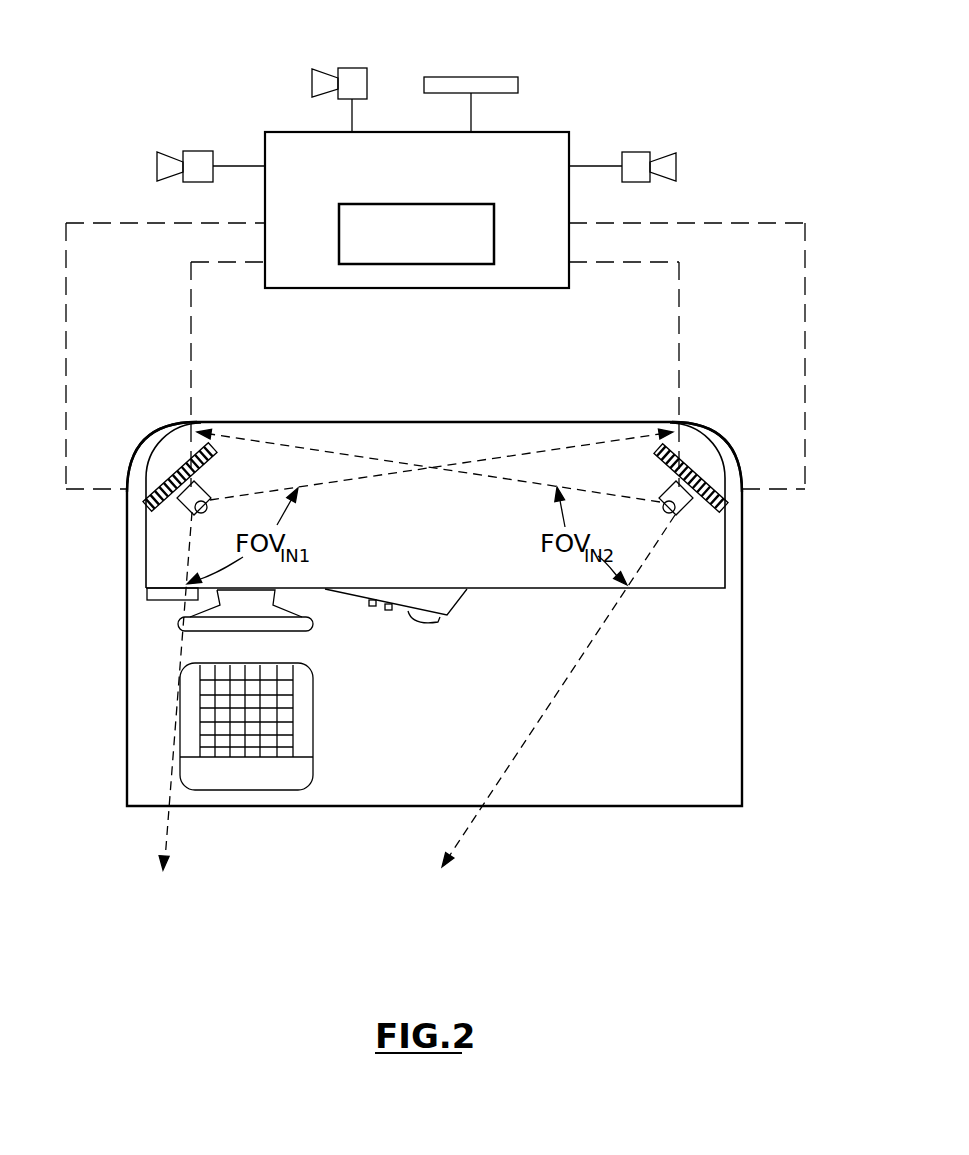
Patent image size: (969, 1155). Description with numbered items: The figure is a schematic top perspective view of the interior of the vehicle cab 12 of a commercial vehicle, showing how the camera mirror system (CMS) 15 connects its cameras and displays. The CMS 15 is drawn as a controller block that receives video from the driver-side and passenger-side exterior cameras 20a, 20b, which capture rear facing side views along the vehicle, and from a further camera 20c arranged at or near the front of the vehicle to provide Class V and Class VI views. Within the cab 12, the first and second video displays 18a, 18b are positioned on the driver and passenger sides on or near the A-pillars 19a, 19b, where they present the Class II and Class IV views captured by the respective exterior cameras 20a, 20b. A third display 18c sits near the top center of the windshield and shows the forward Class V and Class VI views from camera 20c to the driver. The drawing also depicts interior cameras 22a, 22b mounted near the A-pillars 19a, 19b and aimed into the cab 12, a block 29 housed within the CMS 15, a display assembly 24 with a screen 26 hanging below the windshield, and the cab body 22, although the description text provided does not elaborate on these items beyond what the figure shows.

The vehicle cab 12 is at (560, 390).
The camera mirror system 15 is at (569, 145).
The first video display 18a is at (170, 445).
The second video display 18b is at (700, 445).
The third display 18c is at (503, 77).
The A-pillar 19a is at (147, 462).
The A-pillar 19b is at (720, 462).
The exterior camera 20a is at (196, 151).
The exterior camera 20b is at (637, 152).
The camera 20c is at (350, 68).
The vehicle cab / body 22 is at (672, 753).
The first driver monitoring camera 22a is at (210, 483).
The second driver monitoring camera 22b is at (662, 483).
The display assembly 24 is at (377, 618).
The display screen 26 is at (300, 713).
The driver monitoring system 29 is at (385, 264).